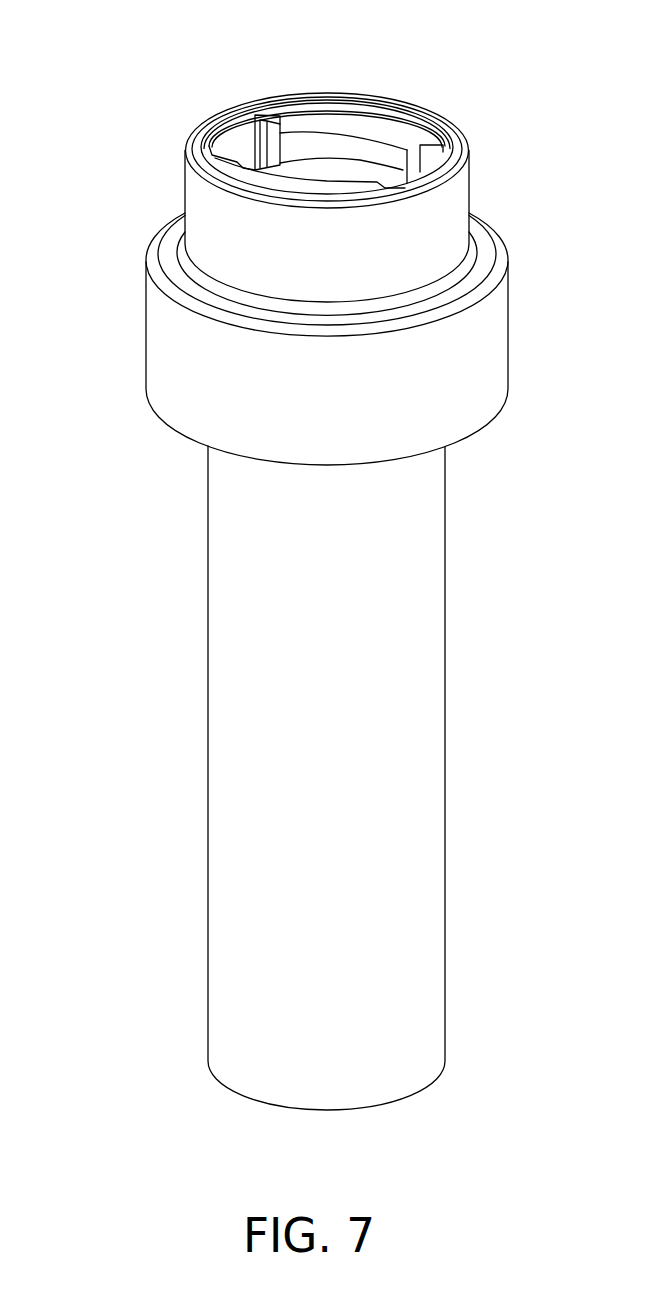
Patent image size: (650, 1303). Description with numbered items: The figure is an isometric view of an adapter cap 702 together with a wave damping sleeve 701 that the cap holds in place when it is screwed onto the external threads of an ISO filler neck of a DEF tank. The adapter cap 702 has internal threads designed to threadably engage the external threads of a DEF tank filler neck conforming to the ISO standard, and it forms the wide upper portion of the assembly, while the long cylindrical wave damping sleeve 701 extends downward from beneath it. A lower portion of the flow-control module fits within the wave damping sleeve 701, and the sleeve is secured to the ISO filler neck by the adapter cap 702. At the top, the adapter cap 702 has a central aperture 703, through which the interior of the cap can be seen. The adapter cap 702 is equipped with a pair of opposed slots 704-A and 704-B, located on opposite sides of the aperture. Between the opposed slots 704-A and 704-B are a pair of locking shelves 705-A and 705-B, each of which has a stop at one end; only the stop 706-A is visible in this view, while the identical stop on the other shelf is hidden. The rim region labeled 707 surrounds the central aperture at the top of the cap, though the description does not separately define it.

The wave damping sleeve 701 is at (262, 692).
The adapter cap 702 is at (191, 357).
The central aperture 703 is at (322, 160).
The slot 704-A is at (231, 130).
The slot 704-B is at (423, 150).
The locking shelf 705-A is at (378, 128).
The locking shelf 705-B is at (240, 177).
The stop 706-A is at (378, 140).
The rim 707 is at (193, 141).